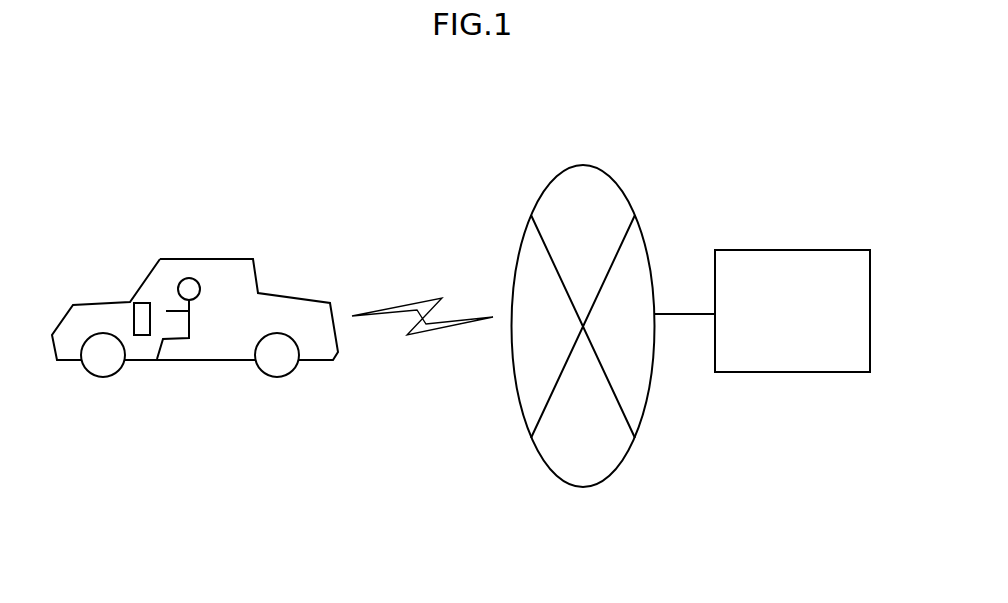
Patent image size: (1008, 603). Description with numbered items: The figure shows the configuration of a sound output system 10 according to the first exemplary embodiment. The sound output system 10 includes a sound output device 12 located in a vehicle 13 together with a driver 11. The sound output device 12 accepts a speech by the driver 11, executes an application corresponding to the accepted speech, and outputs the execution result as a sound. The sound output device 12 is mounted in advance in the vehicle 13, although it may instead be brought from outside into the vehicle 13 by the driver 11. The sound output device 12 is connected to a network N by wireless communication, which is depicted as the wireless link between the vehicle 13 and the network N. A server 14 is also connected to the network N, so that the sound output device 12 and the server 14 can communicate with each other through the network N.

The sound output system 10 is at (747, 113).
The driver 11 is at (197, 282).
The sound output device 12 is at (133, 311).
The vehicle 13 is at (172, 259).
The server 14 is at (793, 250).
The network N is at (620, 192).